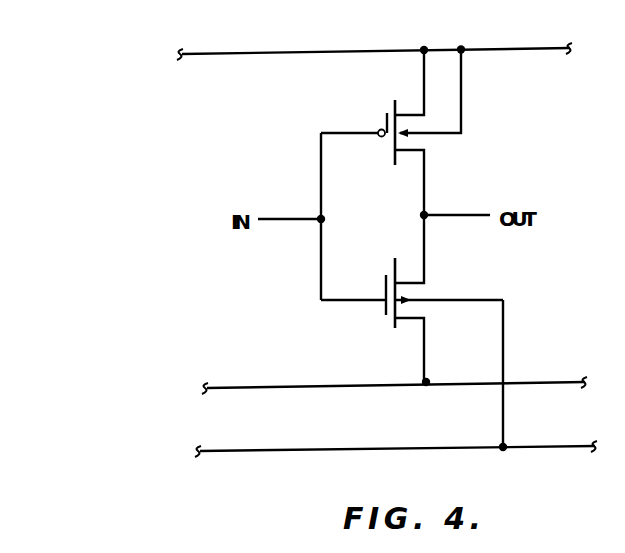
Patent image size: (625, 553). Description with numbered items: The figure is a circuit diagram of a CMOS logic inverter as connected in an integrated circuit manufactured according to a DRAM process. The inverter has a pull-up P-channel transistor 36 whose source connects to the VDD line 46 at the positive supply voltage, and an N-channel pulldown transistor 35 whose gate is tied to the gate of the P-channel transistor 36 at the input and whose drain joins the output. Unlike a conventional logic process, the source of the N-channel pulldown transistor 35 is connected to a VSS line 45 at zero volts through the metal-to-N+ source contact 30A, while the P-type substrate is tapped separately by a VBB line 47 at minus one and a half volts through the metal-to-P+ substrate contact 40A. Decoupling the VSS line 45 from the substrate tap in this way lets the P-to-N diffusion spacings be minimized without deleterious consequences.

The VDD line 46 is at (300, 51).
The pull-up P-channel transistor 36 is at (384, 125).
The N-channel pulldown transistor 35 is at (386, 288).
The VSS line 45 is at (304, 371).
The VBB line 47 is at (300, 434).
The metal-to-N+ source contact 30A is at (427, 386).
The metal-to-P+ substrate contact 40A is at (504, 451).